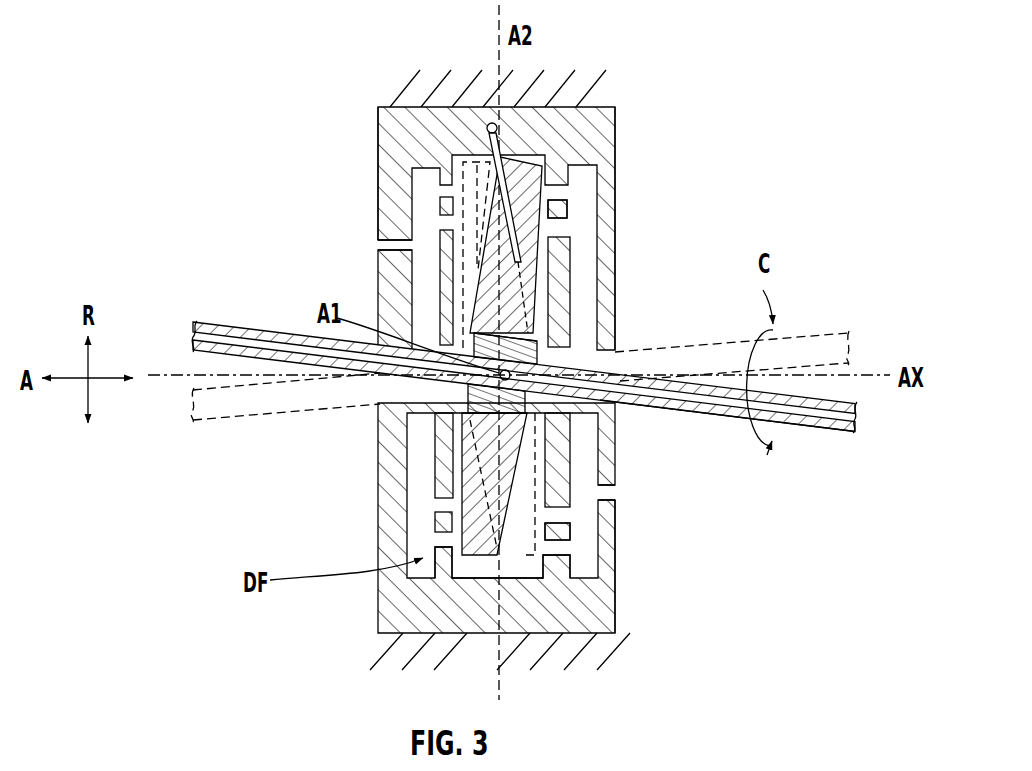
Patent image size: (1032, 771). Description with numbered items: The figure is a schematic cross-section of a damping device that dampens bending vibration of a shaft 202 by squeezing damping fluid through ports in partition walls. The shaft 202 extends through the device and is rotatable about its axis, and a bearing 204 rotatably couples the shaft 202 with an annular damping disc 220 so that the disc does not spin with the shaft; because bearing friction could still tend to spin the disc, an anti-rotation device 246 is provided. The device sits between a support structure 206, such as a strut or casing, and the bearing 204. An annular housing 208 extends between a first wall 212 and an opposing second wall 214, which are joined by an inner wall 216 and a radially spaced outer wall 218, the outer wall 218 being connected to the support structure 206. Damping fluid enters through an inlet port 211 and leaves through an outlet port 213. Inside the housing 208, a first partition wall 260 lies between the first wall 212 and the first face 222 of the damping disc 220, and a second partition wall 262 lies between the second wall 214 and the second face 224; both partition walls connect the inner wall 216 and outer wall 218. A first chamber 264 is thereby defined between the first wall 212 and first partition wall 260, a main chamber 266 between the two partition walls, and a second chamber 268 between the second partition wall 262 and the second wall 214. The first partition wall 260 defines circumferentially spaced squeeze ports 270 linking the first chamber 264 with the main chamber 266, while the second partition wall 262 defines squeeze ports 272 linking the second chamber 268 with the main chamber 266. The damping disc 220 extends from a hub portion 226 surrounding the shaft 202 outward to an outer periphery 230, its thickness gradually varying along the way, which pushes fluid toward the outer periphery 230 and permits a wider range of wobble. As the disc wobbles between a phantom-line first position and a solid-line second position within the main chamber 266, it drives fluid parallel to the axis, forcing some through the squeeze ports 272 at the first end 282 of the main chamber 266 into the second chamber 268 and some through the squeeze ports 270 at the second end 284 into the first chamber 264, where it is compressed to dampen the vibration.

The shaft 202 is at (283, 330).
The bearing 204 is at (537, 325).
The support structure 206 is at (521, 345).
The annular housing 208 is at (617, 587).
The inlet port 211 is at (375, 244).
The first wall 212 is at (378, 215).
The outlet port 213 is at (622, 495).
The second wall 214 is at (615, 227).
The inner wall 216 is at (450, 617).
The outer wall 218 is at (597, 107).
The damping disc 220 is at (537, 348).
The first face 222 is at (460, 430).
The second face 224 is at (522, 422).
The hub portion 226 is at (682, 411).
The outer periphery 230 is at (505, 553).
The anti-rotation device 246 is at (452, 107).
The first partition wall 260 is at (440, 290).
The second partition wall 262 is at (557, 297).
The first chamber 264 is at (422, 453).
The main chamber 266 is at (475, 570).
The second chamber 268 is at (578, 462).
The squeeze ports 270 is at (438, 222).
The squeeze ports 272 is at (578, 220).
The first end 282 is at (527, 150).
The second end 284 is at (523, 577).